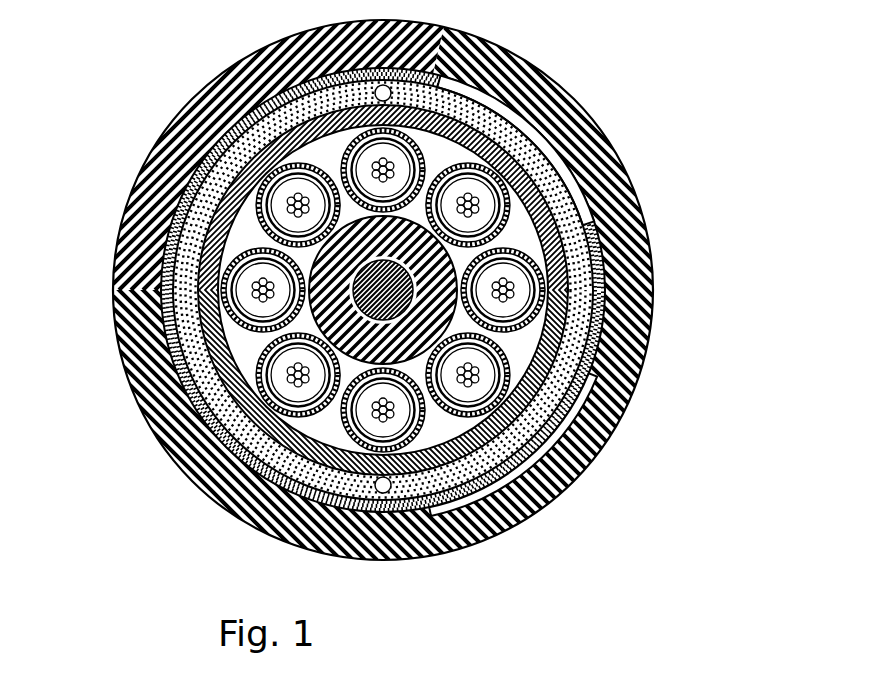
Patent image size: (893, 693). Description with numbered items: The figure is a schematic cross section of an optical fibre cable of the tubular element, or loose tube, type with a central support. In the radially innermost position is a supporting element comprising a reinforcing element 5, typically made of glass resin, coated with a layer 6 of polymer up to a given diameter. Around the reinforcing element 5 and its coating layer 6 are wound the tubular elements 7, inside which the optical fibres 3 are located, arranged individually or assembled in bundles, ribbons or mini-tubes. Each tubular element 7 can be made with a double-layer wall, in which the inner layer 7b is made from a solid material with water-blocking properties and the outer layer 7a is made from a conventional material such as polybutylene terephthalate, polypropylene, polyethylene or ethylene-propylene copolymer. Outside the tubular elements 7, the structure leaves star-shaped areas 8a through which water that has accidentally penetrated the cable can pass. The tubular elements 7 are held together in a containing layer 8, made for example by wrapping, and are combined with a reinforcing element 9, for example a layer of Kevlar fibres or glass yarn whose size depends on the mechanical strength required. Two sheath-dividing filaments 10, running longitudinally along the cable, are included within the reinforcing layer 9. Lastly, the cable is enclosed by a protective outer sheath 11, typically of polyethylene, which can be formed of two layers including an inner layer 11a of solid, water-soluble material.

The optical fibres 3 is at (160, 337).
The reinforcing element 5 is at (455, 31).
The layer of polymer 6 is at (297, 72).
The tubular elements 7 is at (572, 150).
The outer layer 7a is at (628, 306).
The inner layer 7b is at (643, 213).
The containing layer 8 is at (600, 380).
The star-shaped areas 8a is at (243, 233).
The reinforcing element 9 is at (597, 455).
The sheath-dividing filaments 10 is at (415, 510).
The protective outer sheath 11 is at (480, 517).
The inner layer 11a is at (172, 458).